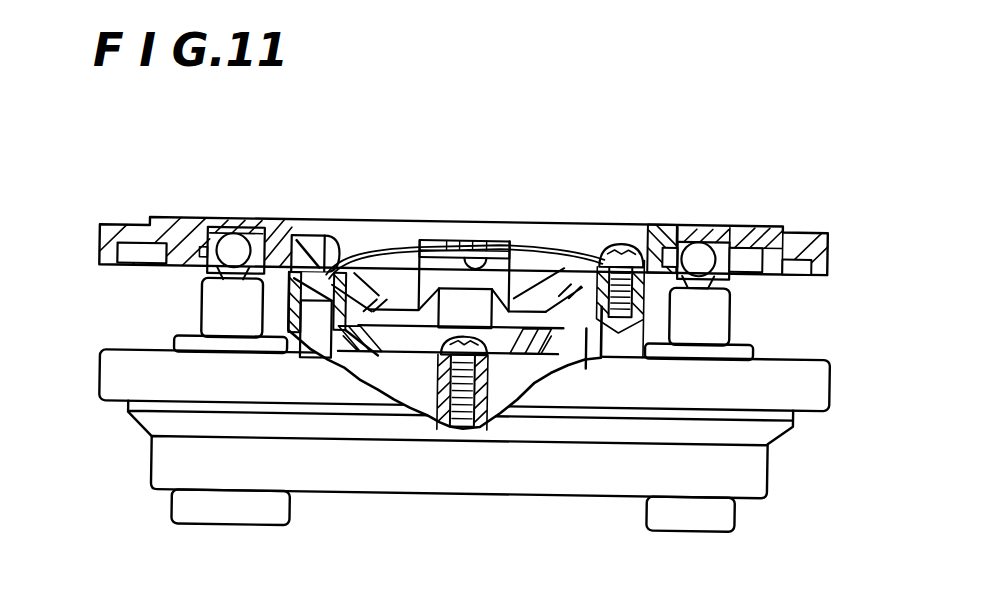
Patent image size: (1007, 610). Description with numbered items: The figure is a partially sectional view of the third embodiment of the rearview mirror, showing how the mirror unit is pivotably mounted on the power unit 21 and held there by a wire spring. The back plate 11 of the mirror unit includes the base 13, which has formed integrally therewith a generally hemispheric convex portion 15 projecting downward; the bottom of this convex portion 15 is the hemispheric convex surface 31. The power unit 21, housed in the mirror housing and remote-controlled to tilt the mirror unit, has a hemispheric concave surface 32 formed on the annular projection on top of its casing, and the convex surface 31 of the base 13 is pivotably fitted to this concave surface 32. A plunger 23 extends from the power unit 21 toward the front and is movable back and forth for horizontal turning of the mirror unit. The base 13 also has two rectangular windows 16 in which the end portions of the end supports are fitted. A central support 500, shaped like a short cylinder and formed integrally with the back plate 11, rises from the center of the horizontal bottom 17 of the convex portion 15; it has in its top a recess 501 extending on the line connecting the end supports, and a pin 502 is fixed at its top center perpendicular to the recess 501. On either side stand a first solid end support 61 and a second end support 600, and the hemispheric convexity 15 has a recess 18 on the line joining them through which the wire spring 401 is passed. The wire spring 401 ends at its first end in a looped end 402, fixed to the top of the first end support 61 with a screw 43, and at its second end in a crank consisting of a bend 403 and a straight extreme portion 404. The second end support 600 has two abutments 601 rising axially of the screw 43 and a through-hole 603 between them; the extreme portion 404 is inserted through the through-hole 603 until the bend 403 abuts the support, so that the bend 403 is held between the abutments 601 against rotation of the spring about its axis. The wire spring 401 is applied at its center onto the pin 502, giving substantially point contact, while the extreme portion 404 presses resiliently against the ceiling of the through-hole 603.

The back plate 11 is at (109, 210).
The base 13 is at (155, 195).
The hemispheric convex portion 15 is at (573, 294).
The rectangular windows 16 is at (643, 220).
The horizontal bottom 17 is at (390, 309).
The recess 18 is at (367, 307).
The power unit 21 is at (150, 463).
The plunger 23 is at (722, 319).
The hemispheric convex surface 31 is at (603, 323).
The hemispheric concave surface 32 is at (390, 319).
The screw 43 is at (627, 220).
The first solid end support 61 is at (673, 284).
The wire spring 401 is at (568, 250).
The looped end 402 is at (612, 250).
The bend 403 is at (352, 290).
The extreme portion 404 is at (293, 276).
The central support 500 is at (520, 218).
The recess 501 is at (462, 257).
The pin 502 is at (495, 236).
The second end support 600 is at (330, 269).
The abutments 601 is at (330, 247).
The through-hole 603 is at (310, 236).